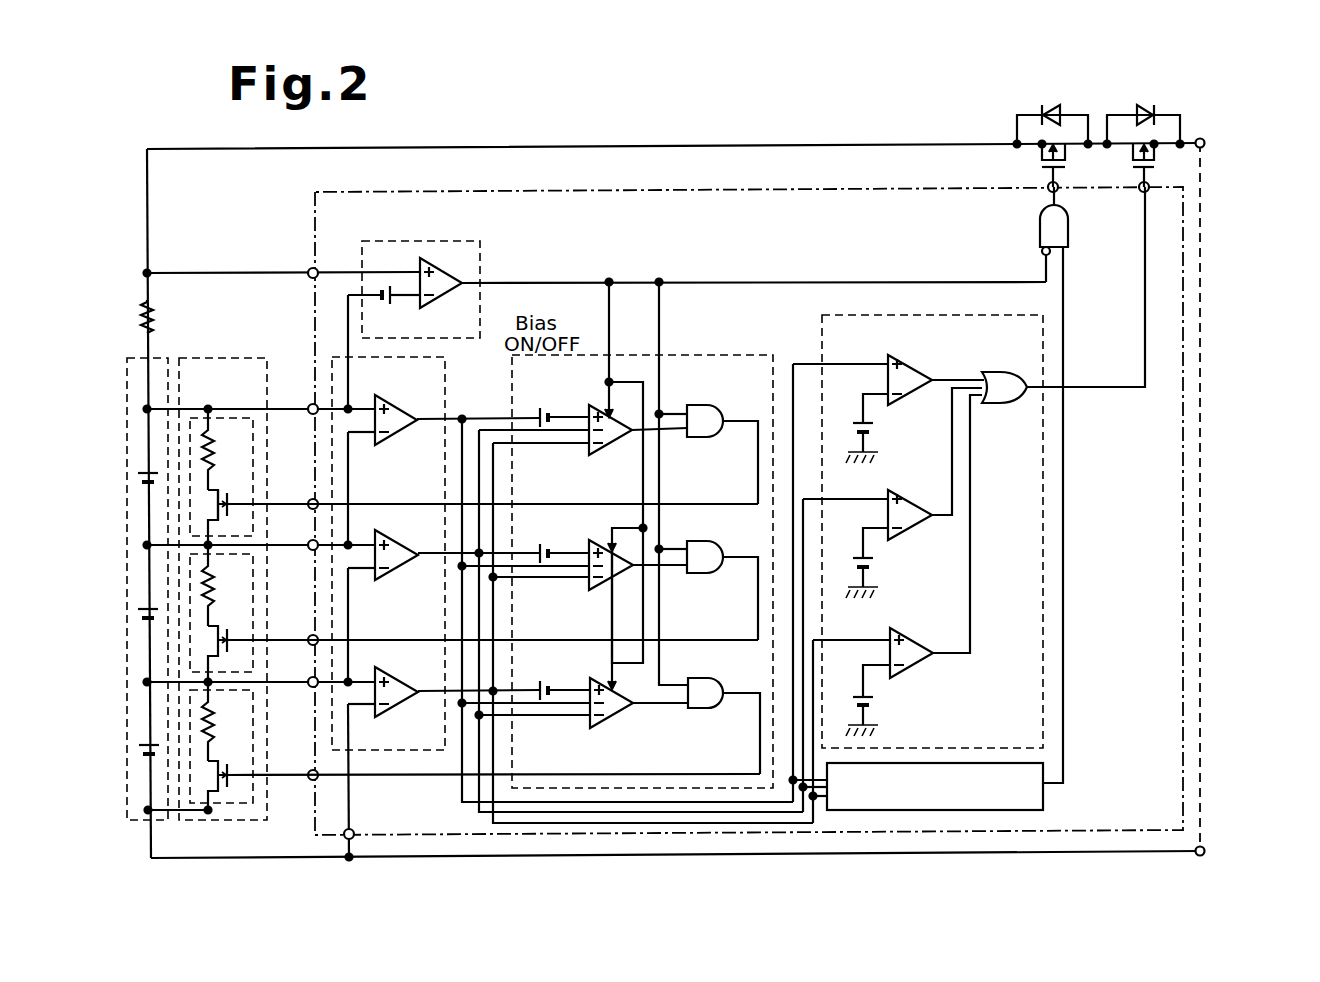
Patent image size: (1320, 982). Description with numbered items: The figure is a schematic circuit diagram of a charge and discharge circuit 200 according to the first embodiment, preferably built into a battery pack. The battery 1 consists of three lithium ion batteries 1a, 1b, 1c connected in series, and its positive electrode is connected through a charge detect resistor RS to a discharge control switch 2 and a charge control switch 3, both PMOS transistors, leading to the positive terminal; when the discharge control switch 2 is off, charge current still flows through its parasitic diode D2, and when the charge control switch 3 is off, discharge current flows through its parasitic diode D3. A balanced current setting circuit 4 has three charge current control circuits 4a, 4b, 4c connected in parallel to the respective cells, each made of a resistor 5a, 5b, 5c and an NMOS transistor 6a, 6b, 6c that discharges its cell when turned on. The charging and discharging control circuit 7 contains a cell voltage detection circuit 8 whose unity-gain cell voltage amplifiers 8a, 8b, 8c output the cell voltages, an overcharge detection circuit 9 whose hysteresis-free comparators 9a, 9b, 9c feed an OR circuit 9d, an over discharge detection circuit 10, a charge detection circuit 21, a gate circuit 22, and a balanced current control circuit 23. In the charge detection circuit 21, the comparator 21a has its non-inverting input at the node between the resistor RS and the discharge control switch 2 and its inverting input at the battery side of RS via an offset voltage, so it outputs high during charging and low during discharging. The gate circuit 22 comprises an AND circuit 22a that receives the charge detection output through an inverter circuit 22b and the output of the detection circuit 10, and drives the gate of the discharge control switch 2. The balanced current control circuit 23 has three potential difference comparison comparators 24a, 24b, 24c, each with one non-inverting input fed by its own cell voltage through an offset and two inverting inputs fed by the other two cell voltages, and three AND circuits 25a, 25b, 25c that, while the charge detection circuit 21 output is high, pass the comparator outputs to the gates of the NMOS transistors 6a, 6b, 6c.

The battery 1 is at (128, 360).
The lithium ion battery 1a is at (147, 470).
The lithium ion battery 1b is at (147, 606).
The lithium ion battery 1c is at (147, 742).
The discharge control switch 2 is at (1039, 135).
The charge control switch 3 is at (1154, 135).
The balanced current setting circuit 4 is at (252, 359).
The charge current control circuit 4a is at (474, 477).
The charge current control circuit 4b is at (474, 613).
The charge current control circuit 4c is at (475, 746).
The resistor 5a is at (236, 445).
The resistor 5b is at (236, 581).
The resistor 5c is at (236, 717).
The NMOS transistor 6a is at (236, 482).
The NMOS transistor 6b is at (236, 618).
The NMOS transistor 6c is at (236, 754).
The charging and discharging control circuit 7 is at (315, 192).
The cell voltage detection circuit 8 is at (436, 550).
The first cell voltage amplifier 8a is at (394, 436).
The second cell voltage amplifier 8b is at (394, 572).
The third cell voltage amplifier 8c is at (394, 709).
The overcharge detection circuit 9 is at (969, 467).
The first comparator 9a is at (922, 352).
The second comparator 9b is at (922, 488).
The third comparator 9c is at (922, 624).
The OR circuit 9d is at (988, 404).
The over discharge detection circuit 10 is at (1043, 795).
The charge detection circuit 21 is at (697, 285).
The comparator 21a is at (440, 298).
The gate circuit 22 is at (1050, 234).
The AND circuit 22a is at (1066, 222).
The inverter circuit 22b is at (1039, 232).
The balanced current control circuit 23 is at (642, 558).
The first potential difference comparison comparator 24a is at (609, 447).
The second potential difference comparison comparator 24b is at (609, 583).
The third potential difference comparison comparator 24c is at (609, 719).
The AND circuit 25a is at (695, 438).
The AND circuit 25b is at (695, 574).
The AND circuit 25c is at (695, 710).
The charge and discharge circuit 200 is at (1236, 248).
The charge detect resistor RS is at (147, 303).
The parasitic diode D2 is at (1047, 108).
The parasitic diode D3 is at (1145, 108).